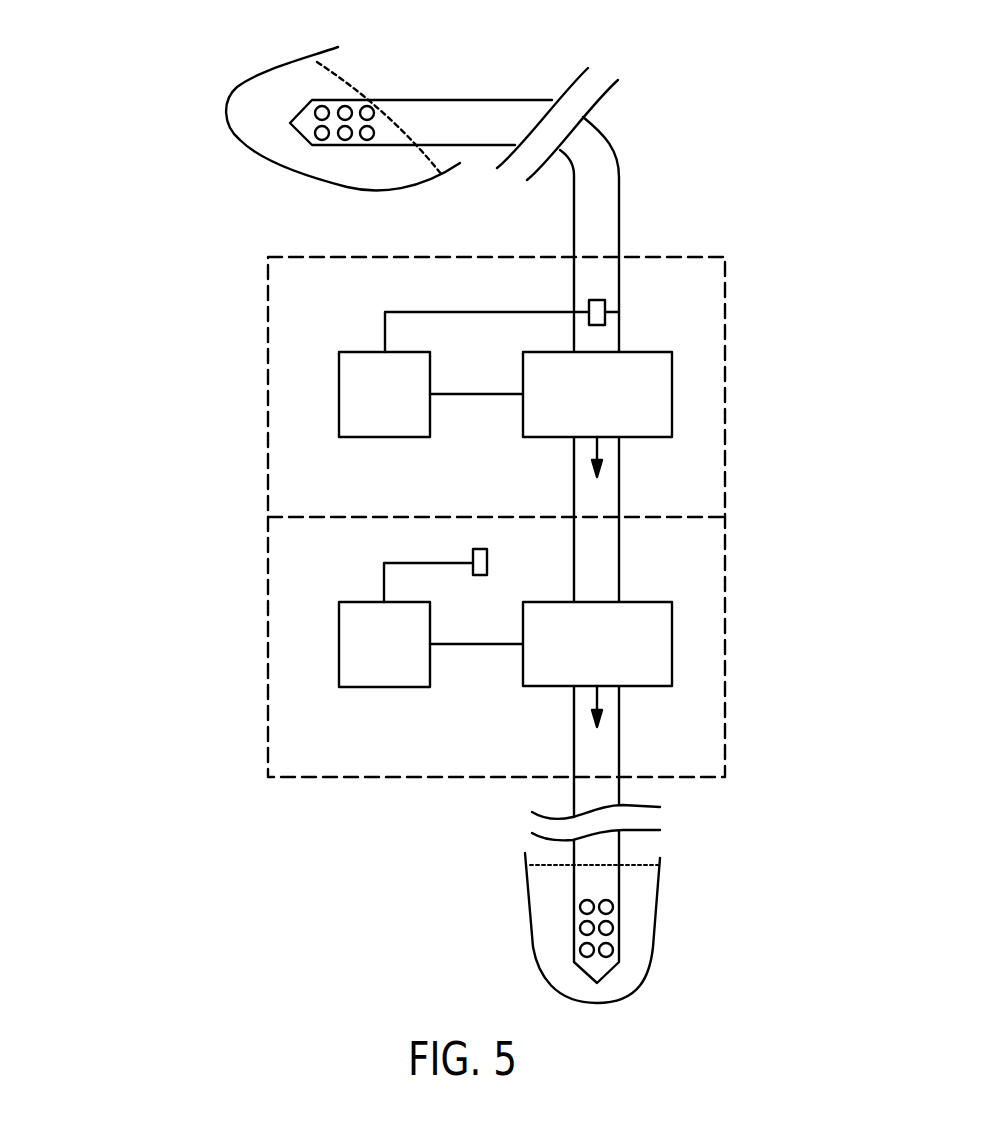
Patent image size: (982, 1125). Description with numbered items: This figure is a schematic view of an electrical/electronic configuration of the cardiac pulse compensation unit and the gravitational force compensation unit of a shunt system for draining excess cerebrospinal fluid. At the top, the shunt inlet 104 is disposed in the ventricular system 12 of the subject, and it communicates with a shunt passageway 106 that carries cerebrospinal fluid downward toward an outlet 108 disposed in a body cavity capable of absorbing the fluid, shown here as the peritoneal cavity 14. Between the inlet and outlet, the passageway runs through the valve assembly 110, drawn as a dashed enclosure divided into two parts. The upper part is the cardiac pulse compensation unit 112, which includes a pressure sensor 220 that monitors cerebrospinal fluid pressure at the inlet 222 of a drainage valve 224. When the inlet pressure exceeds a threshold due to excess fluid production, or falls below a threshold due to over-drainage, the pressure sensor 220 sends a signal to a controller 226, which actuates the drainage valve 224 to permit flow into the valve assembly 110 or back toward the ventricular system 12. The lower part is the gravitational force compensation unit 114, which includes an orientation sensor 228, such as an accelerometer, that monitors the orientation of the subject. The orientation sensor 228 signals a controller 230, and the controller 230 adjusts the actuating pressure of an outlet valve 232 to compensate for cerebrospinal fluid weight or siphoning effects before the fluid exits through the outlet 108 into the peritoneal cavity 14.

The ventricular system 12 is at (360, 78).
The peritoneal cavity 14 is at (647, 865).
The inlet 104 is at (333, 147).
The shunt passageway 106 is at (595, 200).
The outlet 108 is at (620, 933).
The valve assembly 110 is at (767, 515).
The cardiac pulse compensation unit 112 is at (248, 432).
The gravitational force compensation unit 114 is at (248, 687).
The pressure sensor 220 is at (618, 312).
The inlet of drainage valve 222 is at (612, 350).
The drainage valve 224 is at (672, 412).
The controller 226 is at (338, 422).
The orientation sensor 228 is at (487, 570).
The controller 230 is at (338, 669).
The outlet valve 232 is at (672, 663).